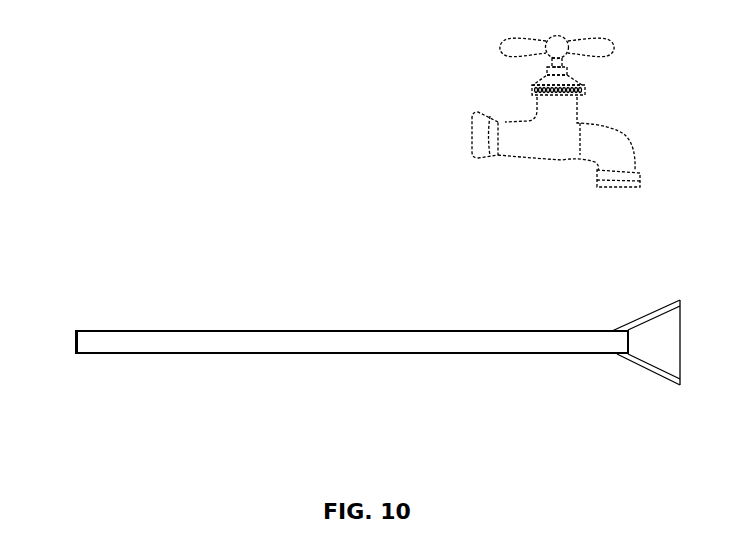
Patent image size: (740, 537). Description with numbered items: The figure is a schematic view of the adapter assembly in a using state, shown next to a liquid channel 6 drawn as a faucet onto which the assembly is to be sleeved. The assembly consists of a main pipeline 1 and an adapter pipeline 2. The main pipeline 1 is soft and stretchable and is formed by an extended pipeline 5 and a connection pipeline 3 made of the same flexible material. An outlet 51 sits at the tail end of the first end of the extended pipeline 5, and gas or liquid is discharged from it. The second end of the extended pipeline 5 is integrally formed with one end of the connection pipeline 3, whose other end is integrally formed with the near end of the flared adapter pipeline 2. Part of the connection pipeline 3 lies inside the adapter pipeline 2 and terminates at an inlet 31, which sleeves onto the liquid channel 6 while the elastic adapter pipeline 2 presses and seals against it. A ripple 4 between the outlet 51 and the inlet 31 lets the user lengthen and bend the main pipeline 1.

The main pipeline 1 is at (349, 329).
The adapter pipeline 2 is at (655, 312).
The connection pipeline 3 is at (610, 347).
The inlet 31 is at (637, 363).
The ripple 4 is at (397, 330).
The extended pipeline 5 is at (170, 354).
The outlet 51 is at (76, 340).
The liquid channel 6 is at (628, 190).